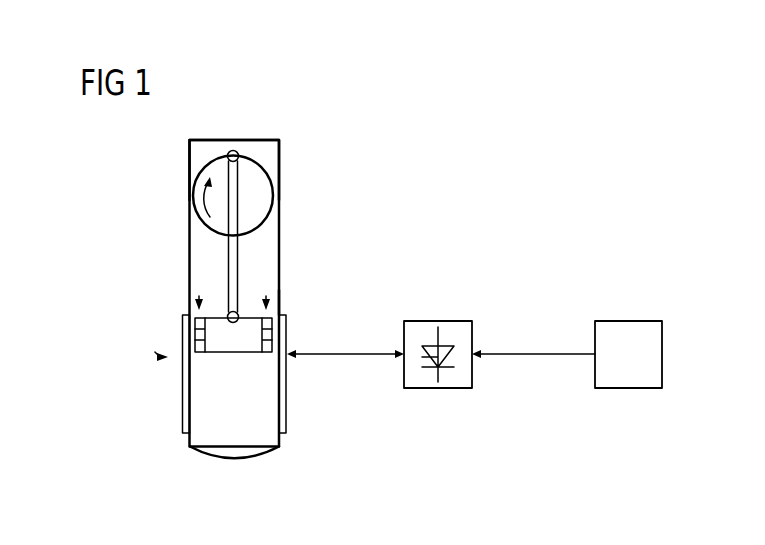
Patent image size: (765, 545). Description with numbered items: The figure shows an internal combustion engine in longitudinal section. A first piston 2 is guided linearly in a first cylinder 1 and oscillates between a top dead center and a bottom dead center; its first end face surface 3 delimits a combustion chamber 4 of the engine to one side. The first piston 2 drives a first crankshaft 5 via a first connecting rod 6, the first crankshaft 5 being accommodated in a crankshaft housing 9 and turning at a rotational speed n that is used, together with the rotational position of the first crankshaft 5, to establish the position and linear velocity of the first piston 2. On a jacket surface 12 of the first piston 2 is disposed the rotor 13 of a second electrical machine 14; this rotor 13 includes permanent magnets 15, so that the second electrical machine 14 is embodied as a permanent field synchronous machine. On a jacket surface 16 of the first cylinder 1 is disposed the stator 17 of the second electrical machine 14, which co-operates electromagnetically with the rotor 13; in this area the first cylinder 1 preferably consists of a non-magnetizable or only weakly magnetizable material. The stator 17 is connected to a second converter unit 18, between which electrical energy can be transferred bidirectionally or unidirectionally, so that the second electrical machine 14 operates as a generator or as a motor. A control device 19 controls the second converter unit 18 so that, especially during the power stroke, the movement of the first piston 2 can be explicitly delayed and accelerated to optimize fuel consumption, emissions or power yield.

The first cylinder 1 is at (283, 438).
The first piston 2 is at (220, 313).
The first end face surface 3 is at (240, 352).
The combustion chamber 4 is at (235, 453).
The first crankshaft 5 is at (267, 168).
The first connecting rod 6 is at (238, 248).
The crankshaft housing 9 is at (188, 163).
The jacket surface of the first piston 12 is at (272, 333).
The rotor of the second electrical machine 13 is at (199, 297).
The second electrical machine 14 is at (157, 353).
The permanent magnets 15 is at (200, 333).
The jacket surface of the first cylinder 16 is at (280, 305).
The stator of the second electrical machine 17 is at (182, 397).
The second converter unit 18 is at (438, 321).
The control device 19 is at (623, 321).
The rotational speed n is at (202, 203).